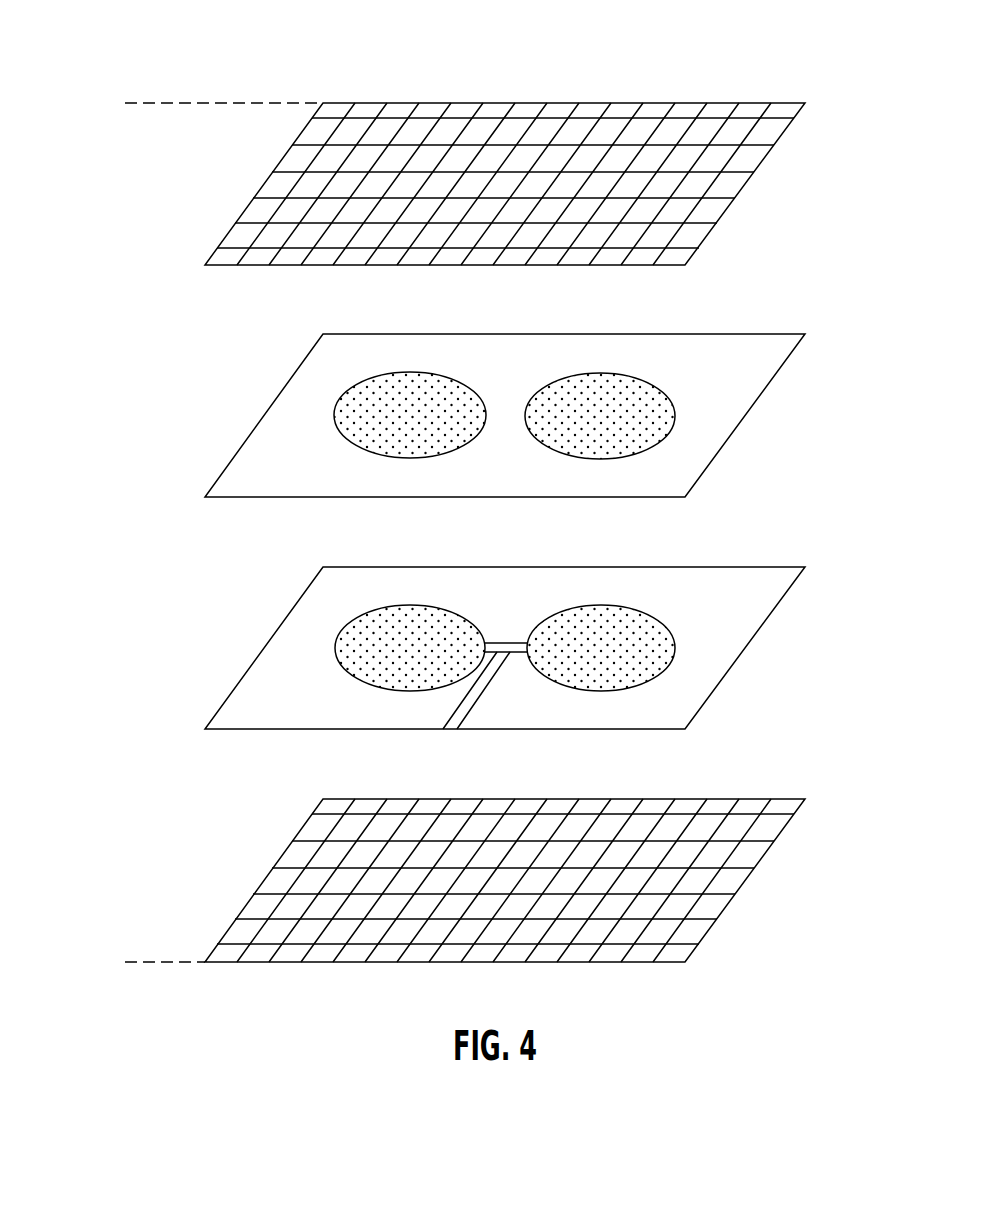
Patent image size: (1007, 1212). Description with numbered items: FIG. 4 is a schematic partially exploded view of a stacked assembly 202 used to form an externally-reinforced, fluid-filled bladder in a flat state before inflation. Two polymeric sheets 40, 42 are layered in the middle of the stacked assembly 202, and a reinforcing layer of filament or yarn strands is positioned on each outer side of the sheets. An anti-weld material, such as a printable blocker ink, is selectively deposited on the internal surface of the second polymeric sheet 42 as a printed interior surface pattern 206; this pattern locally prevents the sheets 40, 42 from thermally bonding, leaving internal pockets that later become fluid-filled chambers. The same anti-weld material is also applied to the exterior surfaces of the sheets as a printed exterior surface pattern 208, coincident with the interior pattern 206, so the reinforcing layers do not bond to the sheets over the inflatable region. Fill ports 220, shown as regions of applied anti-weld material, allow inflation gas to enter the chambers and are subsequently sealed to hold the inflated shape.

The stacked assembly 202 is at (125, 103).
The first polymeric sheet 40 is at (529, 409).
The second polymeric sheet 42 is at (519, 651).
The printed exterior surface pattern 208 is at (594, 464).
The printed interior surface pattern 206 is at (372, 687).
The fill ports 220 is at (485, 690).